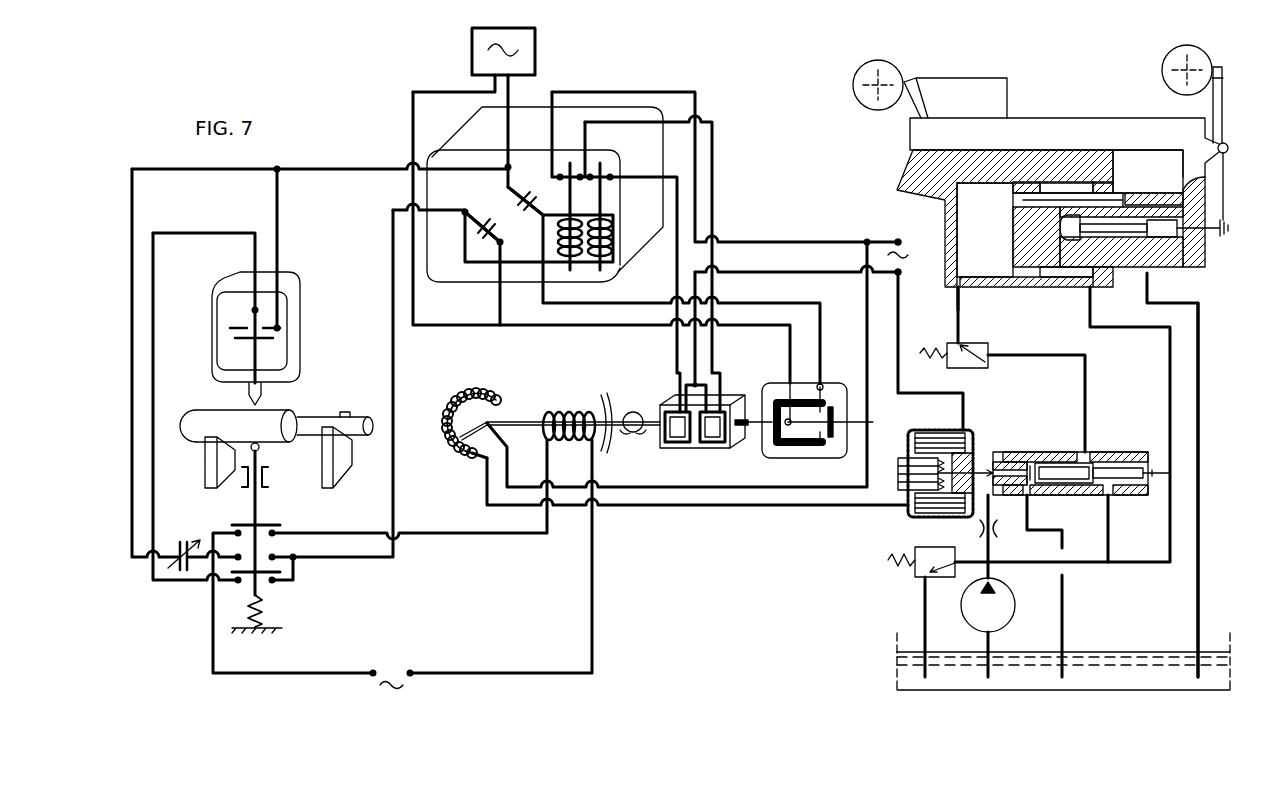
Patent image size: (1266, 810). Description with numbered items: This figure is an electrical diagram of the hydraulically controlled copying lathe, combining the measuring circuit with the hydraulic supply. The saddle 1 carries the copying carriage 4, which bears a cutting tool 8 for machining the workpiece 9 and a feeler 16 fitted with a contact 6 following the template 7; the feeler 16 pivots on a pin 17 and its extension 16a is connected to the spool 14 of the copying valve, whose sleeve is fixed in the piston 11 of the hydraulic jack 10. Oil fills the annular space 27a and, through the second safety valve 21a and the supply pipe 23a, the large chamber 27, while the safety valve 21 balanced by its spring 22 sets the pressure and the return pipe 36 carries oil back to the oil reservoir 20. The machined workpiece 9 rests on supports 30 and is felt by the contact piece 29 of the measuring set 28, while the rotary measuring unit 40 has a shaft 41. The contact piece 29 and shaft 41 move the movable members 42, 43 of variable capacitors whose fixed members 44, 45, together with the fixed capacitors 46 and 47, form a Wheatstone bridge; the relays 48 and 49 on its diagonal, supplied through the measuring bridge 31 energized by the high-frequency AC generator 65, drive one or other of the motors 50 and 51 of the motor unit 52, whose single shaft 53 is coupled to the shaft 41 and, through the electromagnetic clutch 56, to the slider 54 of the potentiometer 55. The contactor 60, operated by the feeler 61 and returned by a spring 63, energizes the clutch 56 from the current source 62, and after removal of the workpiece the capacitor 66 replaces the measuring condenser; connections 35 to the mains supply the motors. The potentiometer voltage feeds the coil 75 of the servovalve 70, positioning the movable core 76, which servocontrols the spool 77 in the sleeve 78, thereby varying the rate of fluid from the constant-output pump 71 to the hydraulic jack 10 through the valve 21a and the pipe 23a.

The saddle 1 is at (907, 165).
The copying carriage 4 is at (1050, 130).
The contact 6 is at (1212, 91).
The template 7 is at (1165, 78).
The cutting tool 8 is at (964, 90).
The workpiece 9 is at (243, 418).
The hydraulic jack 10 is at (1040, 290).
The piston 11 is at (1015, 247).
The spool 14 is at (1168, 240).
The feeler 16 is at (1225, 112).
The extension of the feeler 16a is at (1229, 213).
The pin 17 is at (1226, 144).
The oil reservoir 20 is at (1078, 668).
The safety valve 21 is at (930, 555).
The second safety valve 21a is at (970, 362).
The spring 22 is at (900, 570).
The supply pipe 23a is at (940, 305).
The large chamber 27 is at (975, 220).
The annular space 27a is at (1075, 277).
The measuring set 28 is at (293, 312).
The contact piece 29 is at (265, 395).
The supports 30 is at (210, 467).
The measuring bridge 31 is at (538, 122).
The connections to the mains 35 is at (912, 257).
The return pipe 36 is at (1198, 595).
The measuring unit 40 is at (822, 385).
The shaft 41 is at (752, 420).
The movable member 42 is at (265, 340).
The movable member 43 is at (800, 448).
The fixed member 44 is at (232, 328).
The fixed member 45 is at (852, 422).
The fixed capacitor 46 is at (482, 214).
The fixed capacitor 47 is at (525, 190).
The relay 48 is at (563, 265).
The relay 49 is at (613, 262).
The motor 50 is at (680, 432).
The motor 51 is at (712, 432).
The motor unit 52 is at (725, 398).
The single shaft 53 is at (648, 432).
The slider 54 is at (462, 432).
The potentiometer 55 is at (462, 397).
The electromagnetic clutch 56 is at (622, 393).
The contactor 60 is at (258, 507).
The feeler 61 is at (260, 448).
The current source 62 is at (392, 667).
The spring 63 is at (262, 612).
The high-frequency AC generator 65 is at (524, 63).
The capacitor 66 is at (184, 540).
The servovalve 70 is at (992, 446).
The constant-output pump 71 is at (980, 615).
The coil 75 is at (935, 435).
The movable core 76 is at (908, 490).
The spool 77 is at (1057, 470).
The sleeve 78 is at (1123, 460).